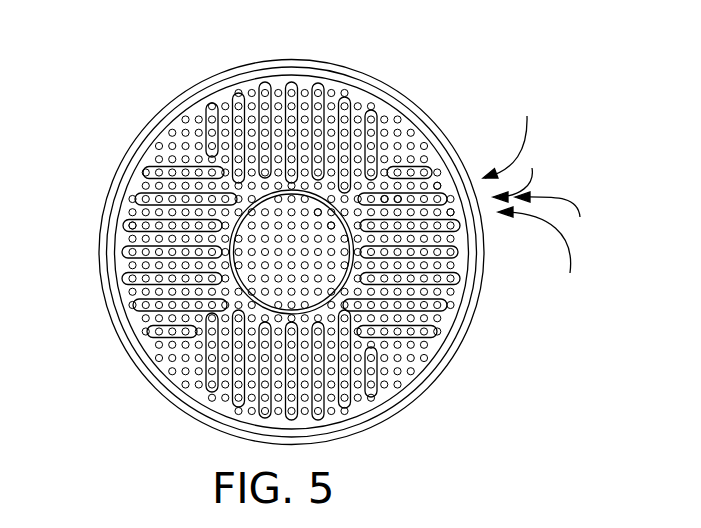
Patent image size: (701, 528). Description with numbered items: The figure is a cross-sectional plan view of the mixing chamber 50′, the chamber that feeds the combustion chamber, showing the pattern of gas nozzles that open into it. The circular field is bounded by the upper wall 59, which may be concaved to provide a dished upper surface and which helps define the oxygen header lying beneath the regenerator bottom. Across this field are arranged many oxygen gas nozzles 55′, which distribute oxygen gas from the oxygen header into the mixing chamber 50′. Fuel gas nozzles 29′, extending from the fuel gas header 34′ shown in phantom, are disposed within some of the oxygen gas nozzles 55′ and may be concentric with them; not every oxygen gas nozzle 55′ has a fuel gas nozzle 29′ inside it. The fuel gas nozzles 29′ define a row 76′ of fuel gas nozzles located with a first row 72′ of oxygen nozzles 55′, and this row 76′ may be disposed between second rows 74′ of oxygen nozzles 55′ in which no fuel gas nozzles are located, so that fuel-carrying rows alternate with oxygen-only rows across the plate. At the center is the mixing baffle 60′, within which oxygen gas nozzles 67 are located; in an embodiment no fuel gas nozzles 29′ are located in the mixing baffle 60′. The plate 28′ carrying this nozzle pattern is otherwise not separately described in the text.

The perforated distributor plate 28′ is at (197, 112).
The fuel gas nozzles 29′ is at (133, 225).
The fuel gas header 34′ is at (446, 197).
The mixing chamber 50′ is at (152, 388).
The oxygen gas nozzles 55′ is at (386, 199).
The upper wall 59 is at (343, 92).
The mixing baffle 60′ is at (281, 190).
The oxygen gas nozzles 67 is at (331, 226).
The first row of oxygen nozzles 72′ is at (525, 175).
The second rows of oxygen nozzles 74′ is at (536, 195).
The row of fuel gas nozzles 76′ is at (560, 217).